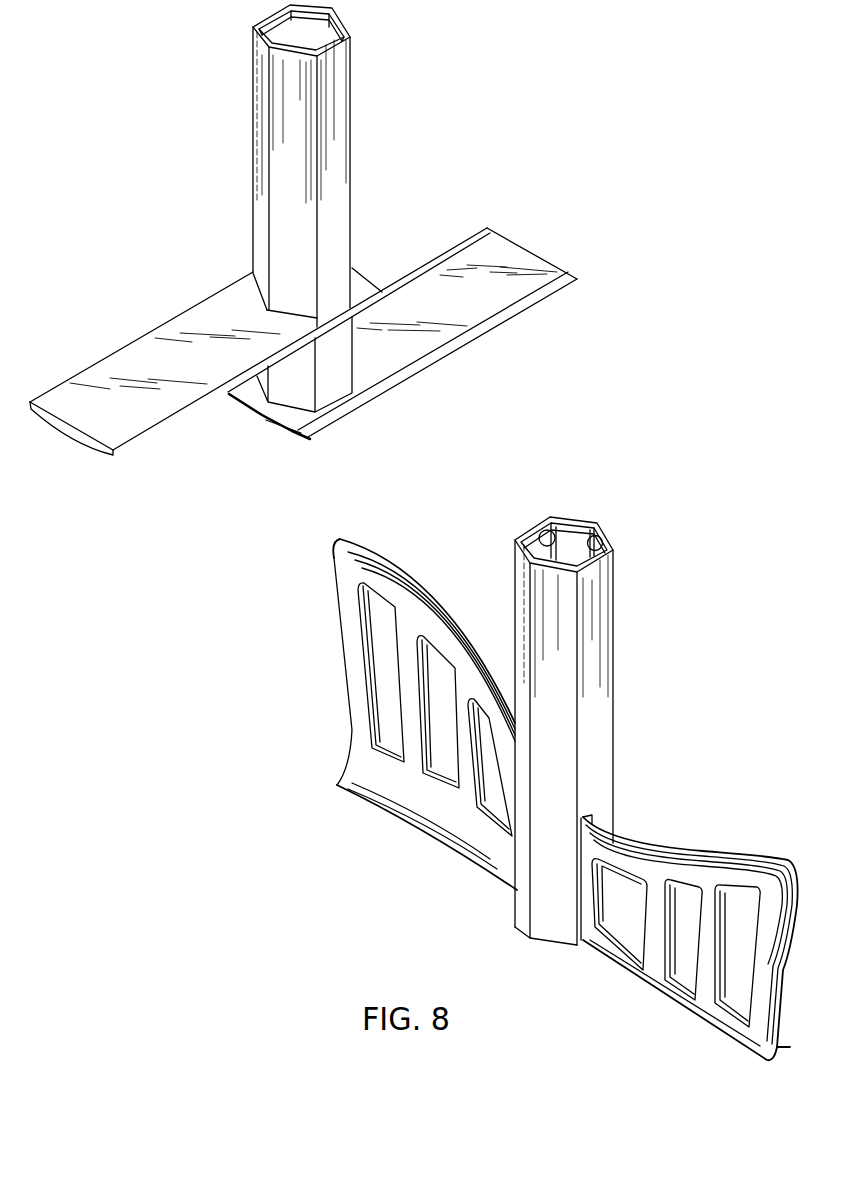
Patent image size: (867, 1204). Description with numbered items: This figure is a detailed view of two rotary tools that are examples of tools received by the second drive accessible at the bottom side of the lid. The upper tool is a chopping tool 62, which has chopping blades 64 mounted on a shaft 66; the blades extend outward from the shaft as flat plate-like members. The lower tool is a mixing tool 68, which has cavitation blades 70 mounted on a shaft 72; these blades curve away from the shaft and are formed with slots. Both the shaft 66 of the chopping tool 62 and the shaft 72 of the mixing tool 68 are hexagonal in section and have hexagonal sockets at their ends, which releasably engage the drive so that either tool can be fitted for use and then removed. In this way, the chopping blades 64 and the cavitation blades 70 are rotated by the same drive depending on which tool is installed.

The chopping tool 62 is at (308, 167).
The chopping blades 64 is at (508, 243).
The shaft 66 is at (256, 190).
The mixing tool 68 is at (612, 722).
The cavitation blades 70 is at (712, 866).
The shaft 72 is at (518, 586).